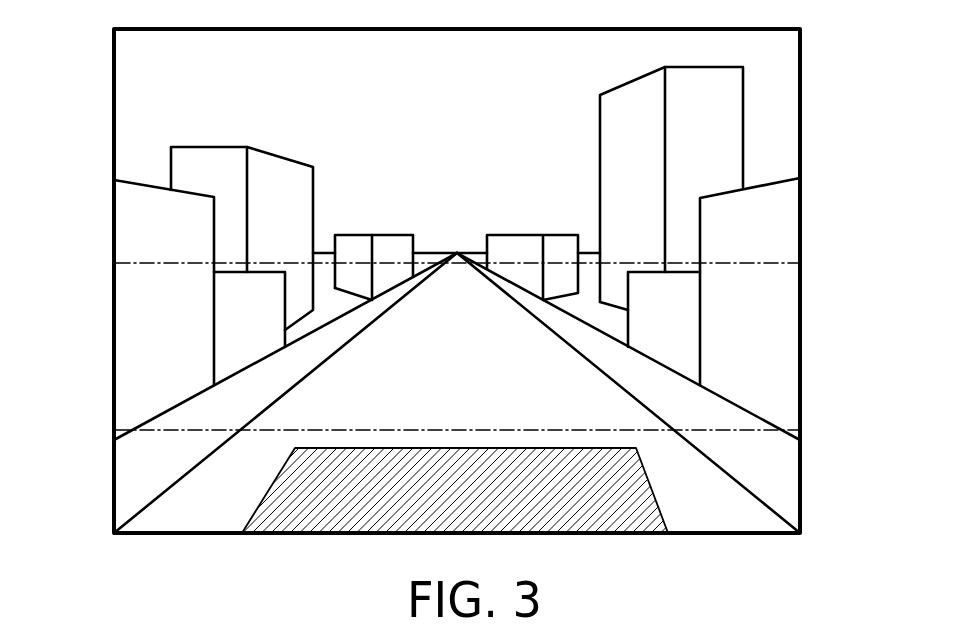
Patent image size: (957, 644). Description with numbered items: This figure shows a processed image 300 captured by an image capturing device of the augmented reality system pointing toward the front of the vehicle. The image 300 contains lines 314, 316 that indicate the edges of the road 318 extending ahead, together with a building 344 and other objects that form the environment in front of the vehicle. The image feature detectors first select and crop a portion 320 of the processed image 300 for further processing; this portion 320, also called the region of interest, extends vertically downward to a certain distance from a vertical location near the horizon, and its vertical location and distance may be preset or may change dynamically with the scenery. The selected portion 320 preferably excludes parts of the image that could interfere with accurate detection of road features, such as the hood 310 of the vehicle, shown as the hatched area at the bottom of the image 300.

The processed image 300 is at (114, 138).
The building 344 is at (715, 122).
The selected portion 320 is at (828, 263).
The line 314 is at (297, 384).
The line 316 is at (598, 368).
The road 318 is at (469, 399).
The hood 310 is at (478, 488).